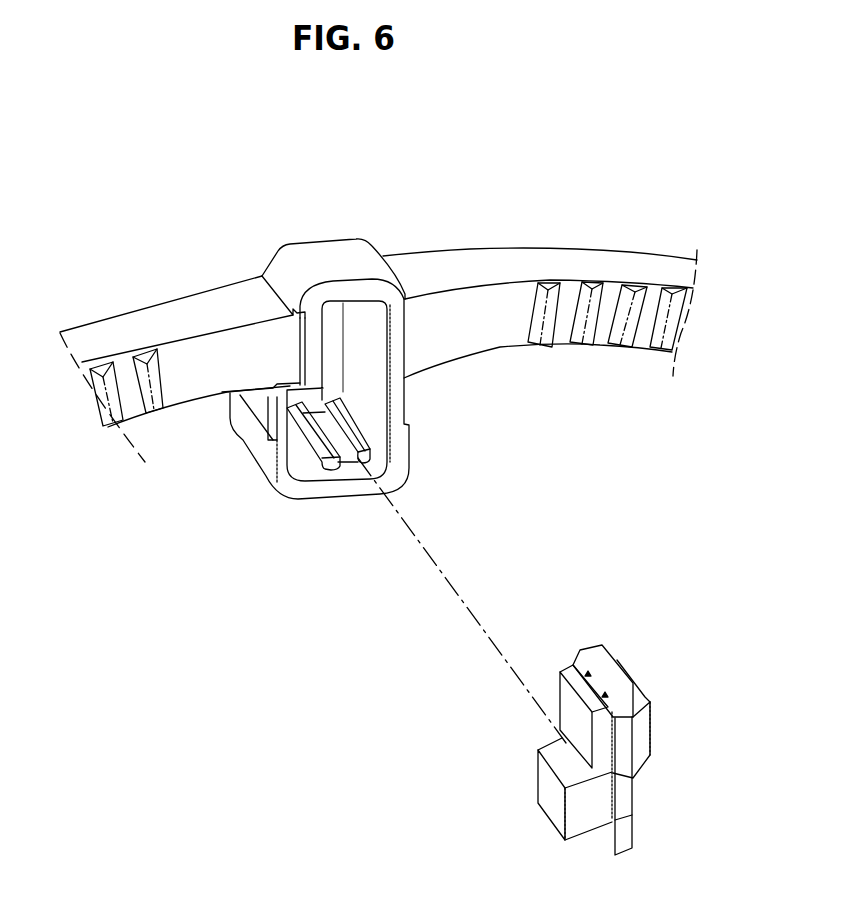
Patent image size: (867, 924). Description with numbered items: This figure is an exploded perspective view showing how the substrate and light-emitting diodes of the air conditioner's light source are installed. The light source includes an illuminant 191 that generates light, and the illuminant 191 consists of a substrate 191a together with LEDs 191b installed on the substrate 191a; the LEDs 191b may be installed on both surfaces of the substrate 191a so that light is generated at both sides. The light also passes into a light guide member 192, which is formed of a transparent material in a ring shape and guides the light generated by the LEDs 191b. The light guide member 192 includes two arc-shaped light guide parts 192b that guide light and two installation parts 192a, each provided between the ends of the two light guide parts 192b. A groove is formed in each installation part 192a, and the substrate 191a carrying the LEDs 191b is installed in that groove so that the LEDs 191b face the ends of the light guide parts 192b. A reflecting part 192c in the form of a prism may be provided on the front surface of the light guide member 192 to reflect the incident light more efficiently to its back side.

The illuminant 191 is at (635, 766).
The substrate 191a is at (630, 847).
The light-emitting diodes (LEDs) 191b is at (602, 747).
The light guide member 192 is at (381, 337).
The installation part 192a is at (356, 372).
The light guide part 192b is at (658, 263).
The reflecting part 192c is at (577, 343).